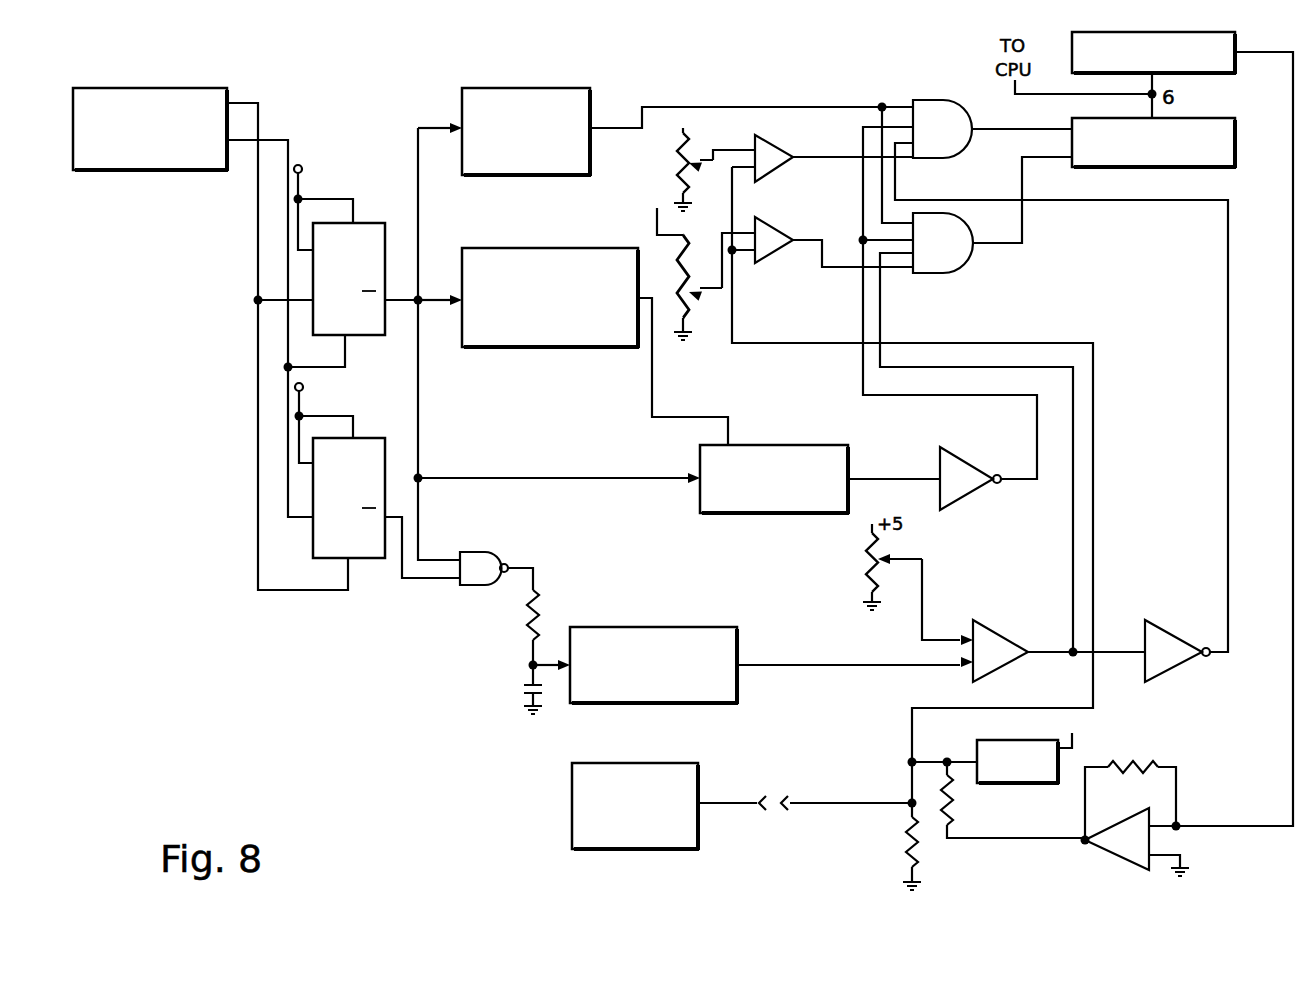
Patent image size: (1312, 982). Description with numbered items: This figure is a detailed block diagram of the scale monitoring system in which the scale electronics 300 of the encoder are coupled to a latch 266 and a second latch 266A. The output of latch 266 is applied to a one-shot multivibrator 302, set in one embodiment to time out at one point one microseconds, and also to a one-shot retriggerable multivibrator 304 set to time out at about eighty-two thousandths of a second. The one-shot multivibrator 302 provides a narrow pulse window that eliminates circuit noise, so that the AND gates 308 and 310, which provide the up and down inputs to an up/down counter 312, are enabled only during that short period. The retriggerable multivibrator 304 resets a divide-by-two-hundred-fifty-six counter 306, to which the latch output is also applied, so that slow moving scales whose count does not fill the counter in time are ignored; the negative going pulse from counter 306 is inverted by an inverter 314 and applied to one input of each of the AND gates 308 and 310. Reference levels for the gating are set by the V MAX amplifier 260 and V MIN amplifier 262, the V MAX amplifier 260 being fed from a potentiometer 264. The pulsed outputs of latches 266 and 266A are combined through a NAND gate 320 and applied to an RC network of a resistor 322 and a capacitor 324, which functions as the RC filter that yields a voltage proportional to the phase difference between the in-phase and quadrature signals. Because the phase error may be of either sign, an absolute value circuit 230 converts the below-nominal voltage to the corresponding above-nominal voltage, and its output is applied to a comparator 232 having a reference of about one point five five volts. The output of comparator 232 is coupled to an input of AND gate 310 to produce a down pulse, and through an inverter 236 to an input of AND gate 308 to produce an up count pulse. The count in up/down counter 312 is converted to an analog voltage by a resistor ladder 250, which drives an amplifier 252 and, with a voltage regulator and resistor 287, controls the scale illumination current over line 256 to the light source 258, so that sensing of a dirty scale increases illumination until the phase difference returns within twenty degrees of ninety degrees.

The scale electronics 300 is at (132, 172).
The latch 266 is at (378, 223).
The latch 266A is at (380, 438).
The one-shot multivibrator 302 is at (478, 177).
The one-shot retriggerable multivibrator 304 is at (600, 248).
The potentiometer 264 is at (672, 166).
The V MAX amplifier 260 is at (785, 166).
The V MIN amplifier 262 is at (770, 258).
The AND gate 308 is at (930, 100).
The AND gate 310 is at (960, 273).
The R/2R ladder 250 is at (1195, 74).
The up/down counter 312 is at (1180, 168).
The divide-by-256 counter 306 is at (793, 445).
The inverter 314 is at (968, 462).
The NAND gate 320 is at (487, 552).
The resistor 322 is at (540, 622).
The capacitor 324 is at (548, 690).
The absolute value circuit 230 is at (657, 627).
The comparator 232 is at (998, 633).
The inverter 236 is at (1172, 633).
The light source 258 is at (688, 763).
The line 256 is at (868, 800).
The resistor 287 is at (977, 752).
The amplifier 252 is at (1112, 852).